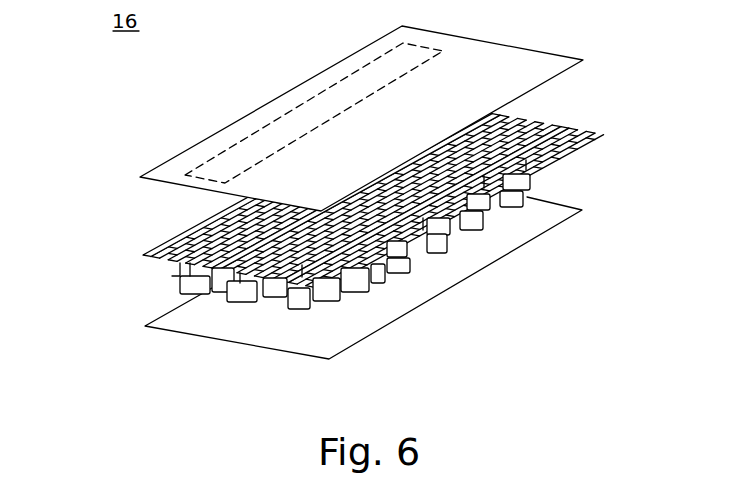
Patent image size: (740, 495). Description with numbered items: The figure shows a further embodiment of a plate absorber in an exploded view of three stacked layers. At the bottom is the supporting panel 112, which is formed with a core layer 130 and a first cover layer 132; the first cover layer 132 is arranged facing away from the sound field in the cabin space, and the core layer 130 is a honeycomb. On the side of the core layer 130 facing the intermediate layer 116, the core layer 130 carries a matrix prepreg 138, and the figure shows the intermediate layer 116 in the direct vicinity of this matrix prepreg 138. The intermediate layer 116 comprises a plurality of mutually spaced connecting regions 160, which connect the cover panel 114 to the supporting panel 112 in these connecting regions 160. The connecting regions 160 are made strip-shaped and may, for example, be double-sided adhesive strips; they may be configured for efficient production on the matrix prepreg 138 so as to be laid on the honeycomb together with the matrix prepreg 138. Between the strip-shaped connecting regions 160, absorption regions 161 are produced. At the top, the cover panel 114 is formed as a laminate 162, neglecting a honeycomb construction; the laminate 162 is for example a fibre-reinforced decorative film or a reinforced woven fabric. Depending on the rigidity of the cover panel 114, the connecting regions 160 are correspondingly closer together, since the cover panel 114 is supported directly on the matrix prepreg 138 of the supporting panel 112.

The supporting panel 112 is at (84, 267).
The cover panel 114 is at (84, 113).
The intermediate layer 116 is at (84, 200).
The core layer 130 is at (408, 273).
The first cover layer 132 is at (487, 267).
The matrix prepreg 138 is at (530, 127).
The connecting regions 160 is at (157, 250).
The absorption regions 161 is at (297, 108).
The laminate 162 is at (243, 118).